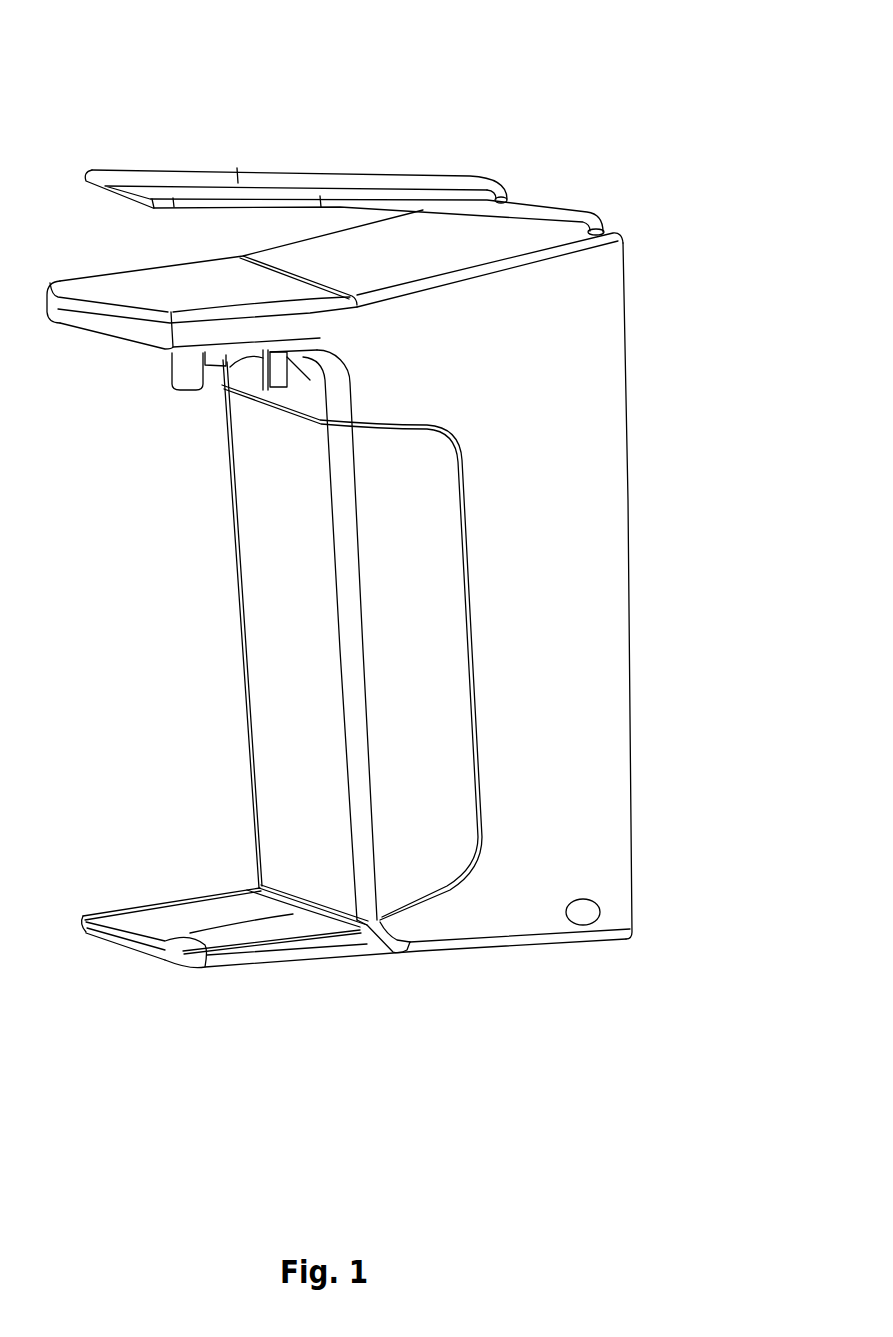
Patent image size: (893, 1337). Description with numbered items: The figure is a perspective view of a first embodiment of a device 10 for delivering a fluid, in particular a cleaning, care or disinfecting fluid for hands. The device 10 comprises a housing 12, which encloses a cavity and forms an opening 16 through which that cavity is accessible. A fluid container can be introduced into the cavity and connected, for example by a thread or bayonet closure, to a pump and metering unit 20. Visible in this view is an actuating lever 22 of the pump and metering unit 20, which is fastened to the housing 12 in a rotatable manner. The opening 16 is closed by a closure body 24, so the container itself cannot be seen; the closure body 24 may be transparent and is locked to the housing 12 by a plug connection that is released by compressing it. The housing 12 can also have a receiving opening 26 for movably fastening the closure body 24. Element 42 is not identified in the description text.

The device 10 is at (642, 77).
The housing 12 is at (580, 528).
The opening 16 is at (192, 545).
The pump and metering unit 20 is at (112, 396).
The actuating lever 22 is at (168, 175).
The closure body 24 is at (257, 697).
The receiving opening 26 is at (588, 925).
The dispensing nozzle / outlet 42 is at (183, 389).